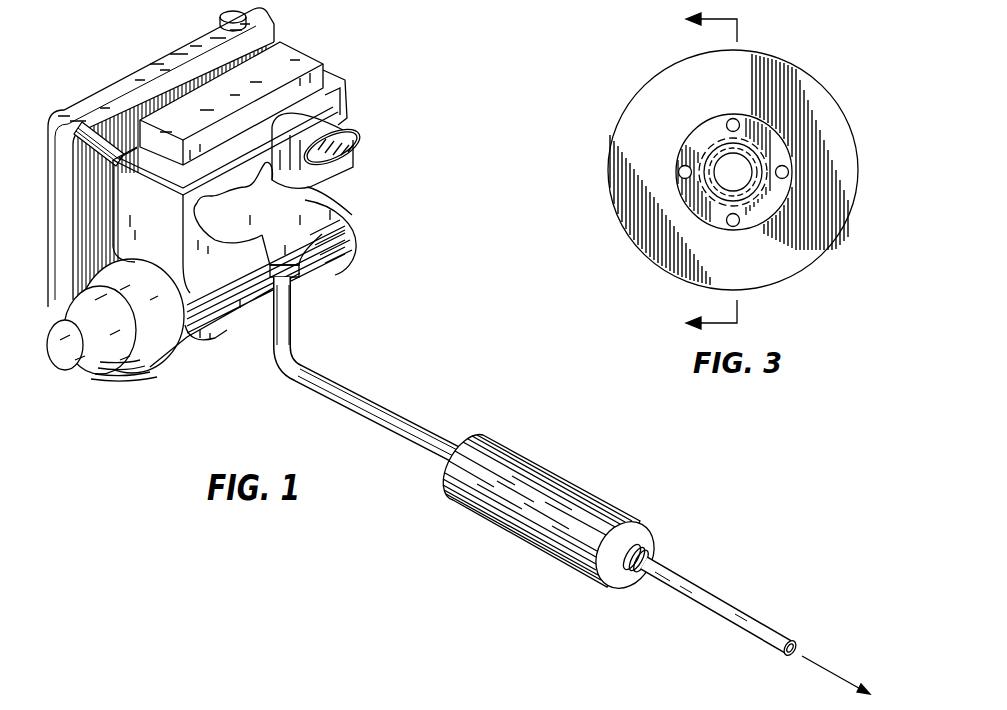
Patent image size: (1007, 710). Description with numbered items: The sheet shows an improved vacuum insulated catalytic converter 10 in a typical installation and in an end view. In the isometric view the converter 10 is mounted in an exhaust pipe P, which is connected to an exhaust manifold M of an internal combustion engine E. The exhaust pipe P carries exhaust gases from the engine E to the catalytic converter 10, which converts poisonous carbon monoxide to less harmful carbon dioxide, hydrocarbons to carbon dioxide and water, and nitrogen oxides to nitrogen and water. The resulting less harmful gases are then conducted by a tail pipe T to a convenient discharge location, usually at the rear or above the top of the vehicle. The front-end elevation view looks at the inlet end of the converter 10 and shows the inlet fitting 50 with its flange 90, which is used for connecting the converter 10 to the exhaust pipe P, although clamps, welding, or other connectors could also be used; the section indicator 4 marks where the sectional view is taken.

In FIG. 1, the vacuum insulated catalytic converter 10 is at (576, 481).
In FIG. 3, the vacuum insulated catalytic converter 10 is at (808, 76).
In FIG. 3, the inlet fitting 50 is at (720, 172).
In FIG. 3, the flange 90 is at (678, 193).
In FIG. 1, the internal combustion engine E is at (350, 212).
In FIG. 1, the exhaust manifold M is at (231, 194).
In FIG. 1, the exhaust pipe P is at (383, 403).
In FIG. 1, the tail pipe T is at (715, 595).
In FIG. 3, the section line 4- 4 is at (698, 172).